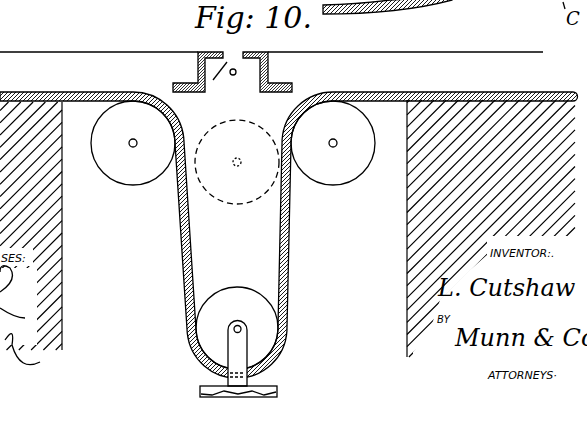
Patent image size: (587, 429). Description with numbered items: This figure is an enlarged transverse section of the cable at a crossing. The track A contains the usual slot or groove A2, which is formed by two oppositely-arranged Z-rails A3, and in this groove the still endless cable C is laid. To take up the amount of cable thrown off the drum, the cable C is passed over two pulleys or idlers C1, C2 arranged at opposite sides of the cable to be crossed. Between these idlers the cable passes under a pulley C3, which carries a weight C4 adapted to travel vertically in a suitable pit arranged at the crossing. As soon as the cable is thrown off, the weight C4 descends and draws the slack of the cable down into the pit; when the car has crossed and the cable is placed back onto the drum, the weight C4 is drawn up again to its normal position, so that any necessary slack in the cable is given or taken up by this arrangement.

The track A is at (78, 41).
The slot or groove A2 is at (190, 118).
The Z-rails A3 is at (288, 70).
The endless cable C is at (178, 255).
The pulley or idler C1 is at (112, 162).
The pulley or idler C2 is at (339, 178).
The pulley C3 is at (232, 295).
The weight C4 is at (212, 383).